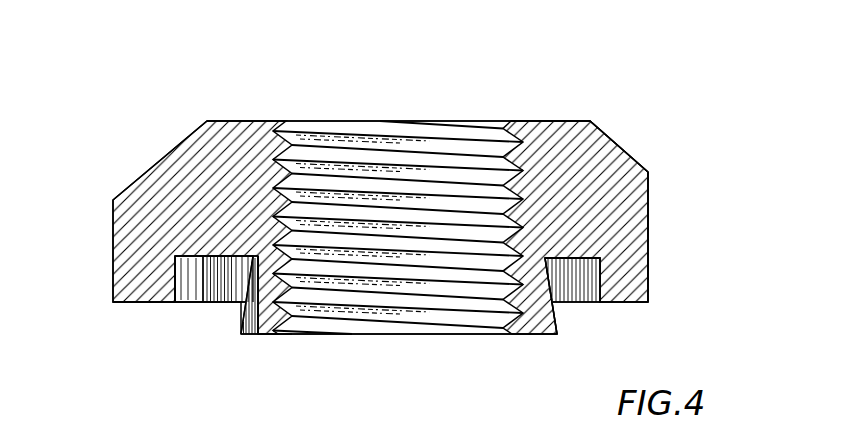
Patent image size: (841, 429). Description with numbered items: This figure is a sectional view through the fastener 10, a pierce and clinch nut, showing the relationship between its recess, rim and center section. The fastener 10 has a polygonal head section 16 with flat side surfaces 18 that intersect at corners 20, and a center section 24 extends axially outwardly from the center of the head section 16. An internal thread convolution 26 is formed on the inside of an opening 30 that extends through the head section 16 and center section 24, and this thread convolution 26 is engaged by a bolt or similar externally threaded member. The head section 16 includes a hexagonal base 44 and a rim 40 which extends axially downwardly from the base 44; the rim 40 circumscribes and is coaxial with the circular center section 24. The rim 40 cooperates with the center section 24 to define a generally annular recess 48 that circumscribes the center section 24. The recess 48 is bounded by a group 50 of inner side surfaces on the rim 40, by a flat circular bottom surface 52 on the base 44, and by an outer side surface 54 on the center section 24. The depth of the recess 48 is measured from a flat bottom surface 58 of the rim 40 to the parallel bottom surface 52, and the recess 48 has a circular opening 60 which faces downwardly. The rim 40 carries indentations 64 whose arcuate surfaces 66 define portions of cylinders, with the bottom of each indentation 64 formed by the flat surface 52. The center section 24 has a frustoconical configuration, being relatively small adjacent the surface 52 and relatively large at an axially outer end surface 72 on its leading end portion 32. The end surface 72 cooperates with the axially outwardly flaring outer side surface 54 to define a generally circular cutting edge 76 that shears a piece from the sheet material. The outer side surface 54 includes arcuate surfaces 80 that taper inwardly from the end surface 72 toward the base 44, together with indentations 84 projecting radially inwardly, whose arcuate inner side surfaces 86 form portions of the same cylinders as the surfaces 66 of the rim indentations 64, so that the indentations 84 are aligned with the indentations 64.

The fastener 10 is at (672, 97).
The head section 16 is at (652, 188).
The flat side surfaces 18 is at (650, 220).
The corners 20 is at (113, 257).
The center section 24 is at (500, 338).
The internal thread convolution 26 is at (287, 120).
The opening 30 is at (428, 120).
The leading end portion 32 is at (276, 340).
The rim 40 is at (652, 291).
The hexagonal base 44 is at (577, 120).
The annular recess 48 is at (590, 304).
The group of inner side surfaces 50 is at (180, 308).
The flat circular bottom surface 52 is at (224, 262).
The outer side surface 54 is at (236, 320).
The flat bottom surface 58 is at (131, 300).
The circular opening 60 is at (208, 262).
The indentations 64 is at (184, 260).
The arcuate surfaces 66 is at (178, 272).
The axially outer end surface 72 is at (541, 336).
The cutting edge 76 is at (566, 334).
The arcuate surfaces 80 is at (548, 268).
The indentations 84 is at (245, 316).
The arcuate inner side surfaces 86 is at (233, 303).